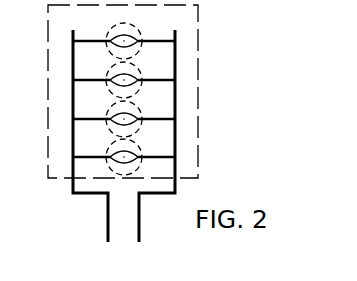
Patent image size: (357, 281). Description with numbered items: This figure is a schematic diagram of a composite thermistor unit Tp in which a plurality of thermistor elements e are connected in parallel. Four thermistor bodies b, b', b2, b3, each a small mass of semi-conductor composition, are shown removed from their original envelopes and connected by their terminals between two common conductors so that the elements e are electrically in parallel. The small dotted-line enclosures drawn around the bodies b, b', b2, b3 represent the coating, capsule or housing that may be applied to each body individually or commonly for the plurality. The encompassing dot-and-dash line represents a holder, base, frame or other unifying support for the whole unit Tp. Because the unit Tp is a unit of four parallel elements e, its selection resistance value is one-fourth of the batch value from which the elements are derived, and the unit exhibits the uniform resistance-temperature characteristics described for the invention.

The composite thermistor unit Tp is at (208, 40).
The thermistor body b is at (124, 32).
The thermistor body b' is at (124, 69).
The thermistor body b2 is at (138, 115).
The thermistor body b3 is at (138, 153).
The thermistor element e is at (114, 24).